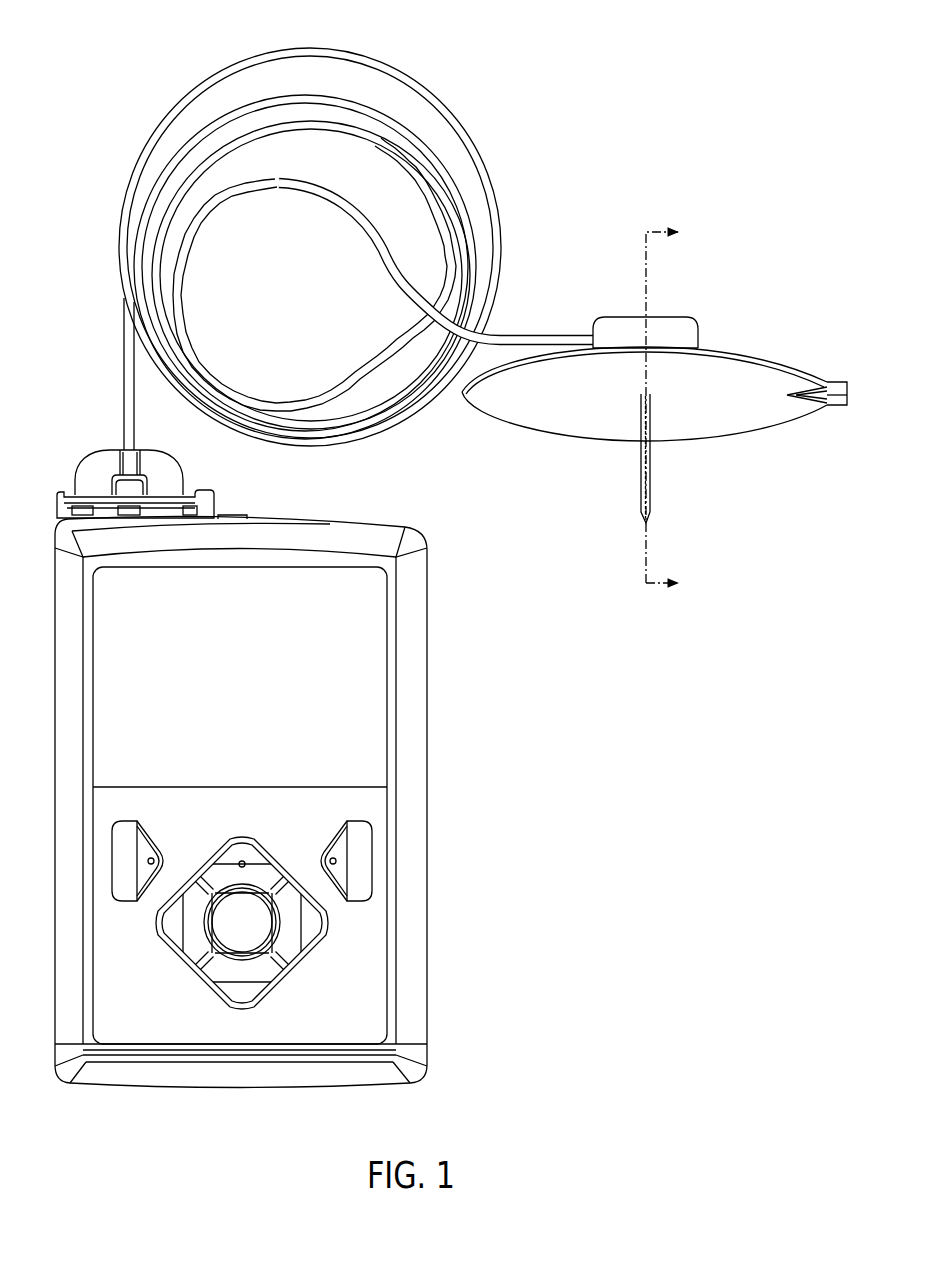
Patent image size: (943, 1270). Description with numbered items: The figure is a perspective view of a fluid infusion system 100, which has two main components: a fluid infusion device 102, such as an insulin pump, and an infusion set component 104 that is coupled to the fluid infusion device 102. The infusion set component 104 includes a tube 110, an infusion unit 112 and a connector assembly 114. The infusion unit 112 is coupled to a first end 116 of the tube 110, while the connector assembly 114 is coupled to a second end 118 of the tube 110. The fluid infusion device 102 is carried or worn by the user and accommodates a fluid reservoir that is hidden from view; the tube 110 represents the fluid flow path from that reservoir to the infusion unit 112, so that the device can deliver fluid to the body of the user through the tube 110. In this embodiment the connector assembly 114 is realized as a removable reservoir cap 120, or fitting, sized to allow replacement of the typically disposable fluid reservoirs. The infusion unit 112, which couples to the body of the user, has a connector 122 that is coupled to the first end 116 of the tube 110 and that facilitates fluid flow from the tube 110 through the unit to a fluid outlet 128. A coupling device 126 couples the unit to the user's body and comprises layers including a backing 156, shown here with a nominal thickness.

The fluid infusion system 100 is at (118, 64).
The fluid infusion device 102 is at (427, 712).
The infusion set component 104 is at (739, 281).
The tube 110 is at (512, 178).
The infusion unit 112 is at (597, 296).
The connector assembly 114 is at (98, 437).
The first end 116 is at (591, 337).
The second end 118 is at (135, 421).
The removable reservoir cap 120 is at (183, 487).
The connector 122 is at (708, 339).
The coupling device 126 is at (802, 360).
The fluid outlet 128 is at (664, 499).
The backing 156 is at (727, 432).